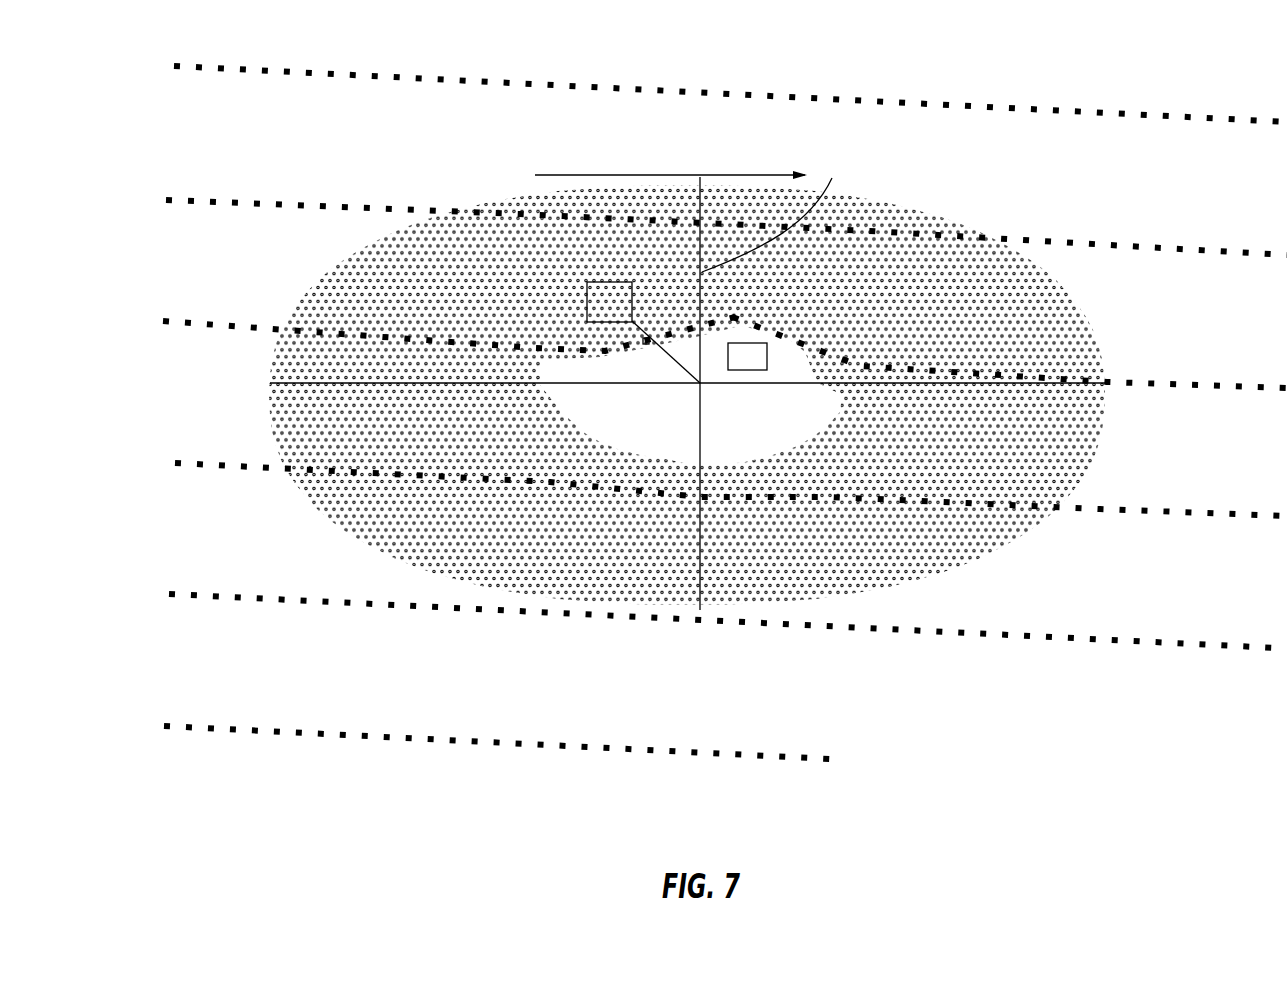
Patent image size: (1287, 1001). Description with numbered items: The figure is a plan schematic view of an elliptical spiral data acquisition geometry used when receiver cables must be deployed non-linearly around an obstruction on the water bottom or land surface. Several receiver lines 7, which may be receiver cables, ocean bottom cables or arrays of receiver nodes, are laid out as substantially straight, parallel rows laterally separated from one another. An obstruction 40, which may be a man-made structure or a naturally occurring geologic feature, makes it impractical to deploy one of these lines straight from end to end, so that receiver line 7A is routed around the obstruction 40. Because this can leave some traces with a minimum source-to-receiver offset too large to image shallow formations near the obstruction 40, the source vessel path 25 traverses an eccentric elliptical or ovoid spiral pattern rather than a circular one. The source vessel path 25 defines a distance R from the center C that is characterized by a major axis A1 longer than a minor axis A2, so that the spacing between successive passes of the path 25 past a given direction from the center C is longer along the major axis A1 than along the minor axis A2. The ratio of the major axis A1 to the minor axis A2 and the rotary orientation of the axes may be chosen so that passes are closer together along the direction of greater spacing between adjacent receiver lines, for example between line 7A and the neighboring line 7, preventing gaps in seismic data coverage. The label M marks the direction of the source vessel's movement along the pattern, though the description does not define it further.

The receiver lines 7 is at (267, 77).
The receiver line 7A is at (646, 346).
The source vessel path 25 is at (918, 212).
The obstruction 40 is at (746, 372).
The direction M is at (564, 172).
The minor axis A2 is at (778, 210).
The major axis A1 is at (824, 381).
The center C is at (609, 302).
The distance R is at (698, 388).